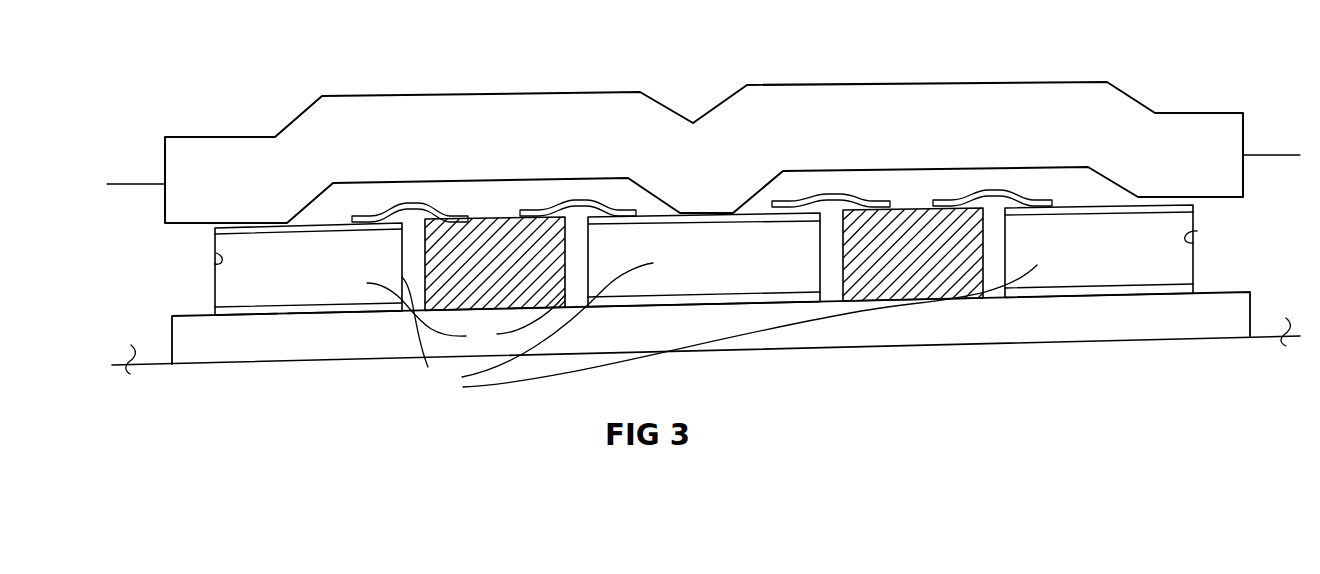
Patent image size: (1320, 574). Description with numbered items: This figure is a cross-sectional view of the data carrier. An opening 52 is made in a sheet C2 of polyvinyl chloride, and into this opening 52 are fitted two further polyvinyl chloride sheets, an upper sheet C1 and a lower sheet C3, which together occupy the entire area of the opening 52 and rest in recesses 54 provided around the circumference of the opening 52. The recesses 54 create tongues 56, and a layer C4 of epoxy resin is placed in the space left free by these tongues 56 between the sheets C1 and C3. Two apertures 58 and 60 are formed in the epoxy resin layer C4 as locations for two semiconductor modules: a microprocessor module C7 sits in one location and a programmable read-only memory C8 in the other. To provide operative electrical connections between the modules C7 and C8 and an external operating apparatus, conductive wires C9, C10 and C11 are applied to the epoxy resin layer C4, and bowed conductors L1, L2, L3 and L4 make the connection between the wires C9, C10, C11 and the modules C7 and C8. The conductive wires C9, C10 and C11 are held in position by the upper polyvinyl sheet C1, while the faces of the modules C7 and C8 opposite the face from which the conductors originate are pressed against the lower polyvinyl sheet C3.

The polyvinyl chloride sheet C1 is at (215, 155).
The polyvinyl chloride sheet C2 is at (706, 360).
The polyvinyl chloride sheet C3 is at (265, 337).
The epoxy resin layer C4 is at (719, 328).
The microprocessor module C7 is at (494, 224).
The programmable read-only memory C8 is at (910, 233).
The conductive wire C9 is at (328, 228).
The conductive wire C10 is at (696, 220).
The conductive wire C11 is at (1077, 211).
The bowed conductor L1 is at (420, 205).
The bowed conductor L2 is at (576, 203).
The bowed conductor L3 is at (832, 196).
The bowed conductor L4 is at (995, 192).
The opening 52 is at (216, 253).
The recess 54 is at (197, 222).
The tongue 56 is at (202, 312).
The aperture 58 is at (466, 315).
The aperture 60 is at (820, 240).